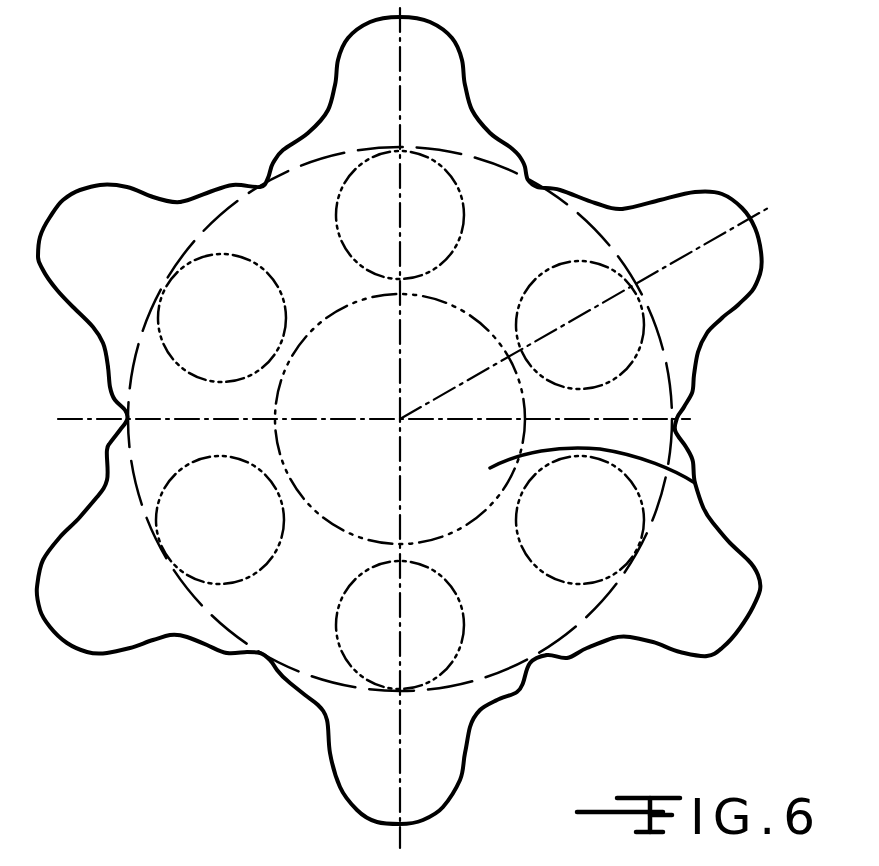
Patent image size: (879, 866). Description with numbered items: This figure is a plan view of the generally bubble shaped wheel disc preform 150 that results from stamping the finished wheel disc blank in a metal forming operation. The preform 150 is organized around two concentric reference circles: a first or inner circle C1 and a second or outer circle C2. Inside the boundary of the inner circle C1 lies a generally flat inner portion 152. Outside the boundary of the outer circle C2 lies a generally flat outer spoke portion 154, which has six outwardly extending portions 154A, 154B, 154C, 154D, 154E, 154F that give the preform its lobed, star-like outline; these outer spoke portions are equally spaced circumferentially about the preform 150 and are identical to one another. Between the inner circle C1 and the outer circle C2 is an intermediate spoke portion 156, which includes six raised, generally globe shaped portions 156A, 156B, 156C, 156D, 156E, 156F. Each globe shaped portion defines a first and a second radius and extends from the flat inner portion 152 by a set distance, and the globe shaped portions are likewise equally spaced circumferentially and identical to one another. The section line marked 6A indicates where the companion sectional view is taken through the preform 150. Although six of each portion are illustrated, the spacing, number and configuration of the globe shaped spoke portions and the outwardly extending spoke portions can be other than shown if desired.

The bubble shaped wheel disc preform 150 is at (414, 428).
The flat inner portion 152 is at (693, 483).
The outer spoke portion 154 is at (429, 420).
The outwardly extending portion 154A is at (452, 39).
The outwardly extending portion 154B is at (733, 280).
The outwardly extending portion 154C is at (722, 640).
The outwardly extending portion 154D is at (437, 783).
The outwardly extending portion 154E is at (107, 637).
The outwardly extending portion 154F is at (92, 207).
The intermediate spoke portion 156 is at (430, 448).
The globe shaped portion 156A is at (462, 202).
The globe shaped portion 156B is at (560, 372).
The globe shaped portion 156C is at (607, 567).
The globe shaped portion 156D is at (368, 667).
The globe shaped portion 156E is at (247, 567).
The globe shaped portion 156F is at (200, 252).
The first or inner circle C1 is at (466, 531).
The second or outer circle C2 is at (648, 530).
The section line 6A- 6A is at (52, 402).